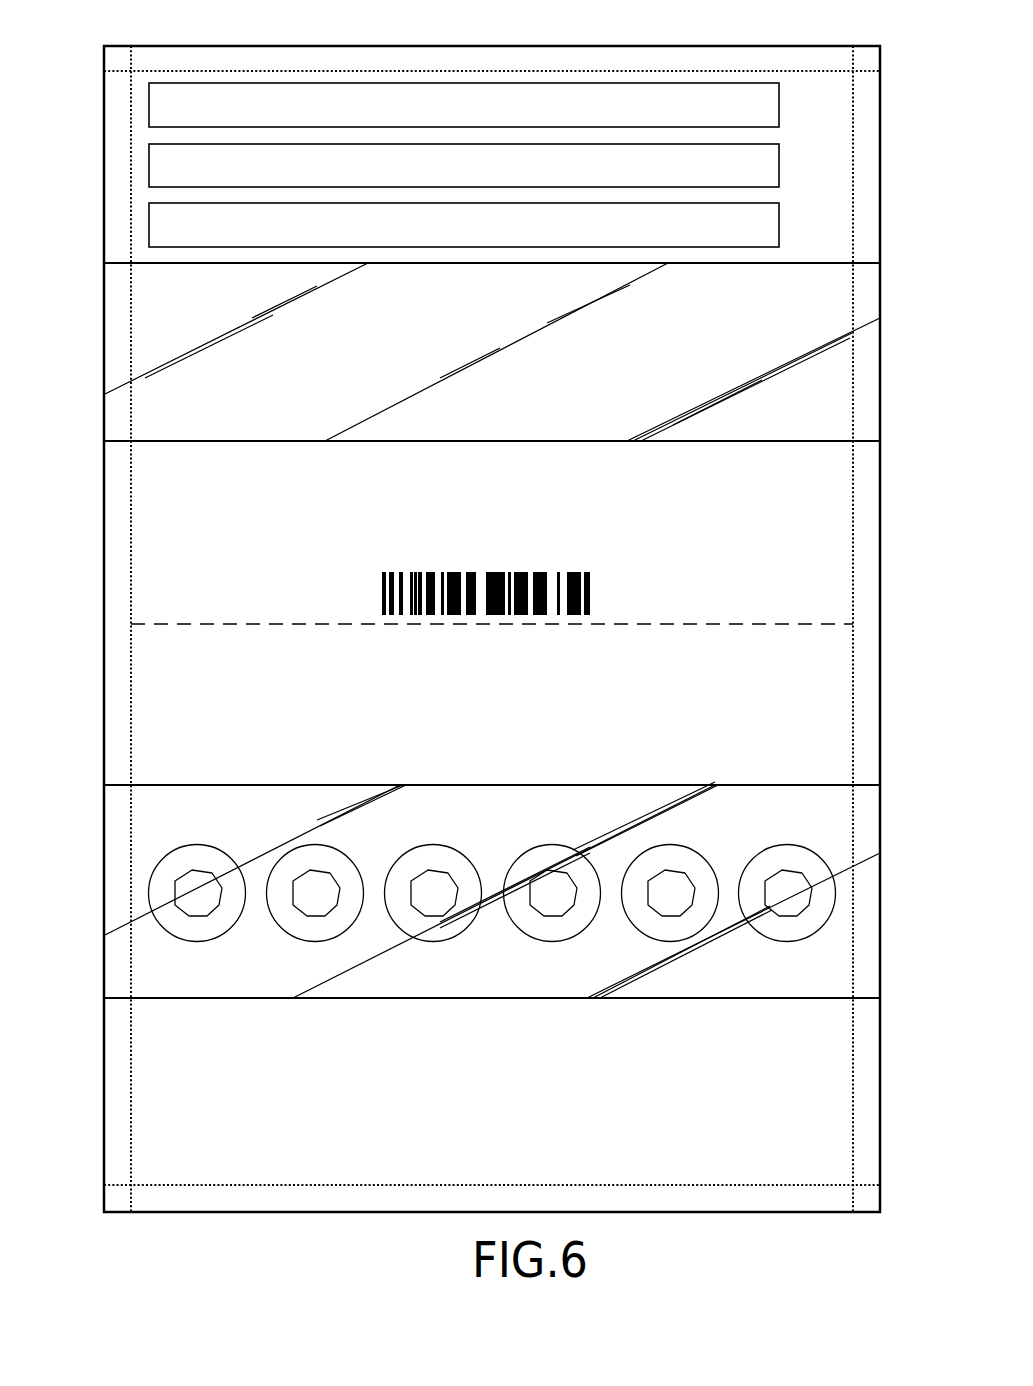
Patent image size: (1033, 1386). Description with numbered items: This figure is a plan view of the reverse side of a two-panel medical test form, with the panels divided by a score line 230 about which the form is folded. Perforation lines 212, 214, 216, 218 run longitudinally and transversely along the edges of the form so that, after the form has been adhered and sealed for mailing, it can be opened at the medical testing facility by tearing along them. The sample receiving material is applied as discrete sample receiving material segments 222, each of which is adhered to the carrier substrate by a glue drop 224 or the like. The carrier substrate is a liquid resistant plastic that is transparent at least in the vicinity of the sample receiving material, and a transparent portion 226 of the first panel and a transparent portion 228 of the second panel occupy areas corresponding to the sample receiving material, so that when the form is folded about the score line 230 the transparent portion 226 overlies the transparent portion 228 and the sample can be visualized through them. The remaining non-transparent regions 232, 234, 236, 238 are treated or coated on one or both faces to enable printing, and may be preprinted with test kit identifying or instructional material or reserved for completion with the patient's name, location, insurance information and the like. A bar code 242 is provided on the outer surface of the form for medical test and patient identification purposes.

The perforation line 212 is at (853, 935).
The perforation line 214 is at (132, 1063).
The perforation line 216 is at (452, 77).
The perforation line 218 is at (200, 1185).
The sample receiving material segment 222 is at (313, 847).
The glue drop 224 is at (307, 902).
The transparent portion of first panel 226 is at (158, 302).
The transparent portion of second panel 228 is at (465, 913).
The score line 230 is at (730, 623).
The non-transparent region 232 is at (813, 137).
The non-transparent region 234 is at (820, 553).
The non-transparent region 236 is at (820, 675).
The non-transparent region 238 is at (810, 1108).
The bar code 242 is at (598, 581).